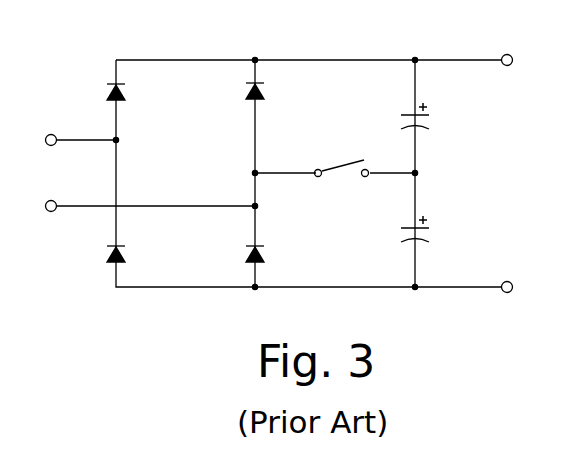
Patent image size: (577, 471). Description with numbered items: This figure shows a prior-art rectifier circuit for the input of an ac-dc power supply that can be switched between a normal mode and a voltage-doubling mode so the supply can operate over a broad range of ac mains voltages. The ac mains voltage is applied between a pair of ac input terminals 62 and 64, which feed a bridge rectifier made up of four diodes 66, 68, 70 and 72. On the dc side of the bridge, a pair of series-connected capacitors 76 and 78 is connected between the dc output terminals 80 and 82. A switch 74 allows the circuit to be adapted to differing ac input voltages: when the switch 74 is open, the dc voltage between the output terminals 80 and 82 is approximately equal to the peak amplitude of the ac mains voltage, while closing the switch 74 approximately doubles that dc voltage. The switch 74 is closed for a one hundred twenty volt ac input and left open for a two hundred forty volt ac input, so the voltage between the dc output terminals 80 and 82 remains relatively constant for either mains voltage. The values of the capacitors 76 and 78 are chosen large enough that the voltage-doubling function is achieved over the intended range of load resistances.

The ac input terminal 62 is at (78, 138).
The ac input terminal 64 is at (83, 208).
The diode 66 is at (118, 114).
The diode 68 is at (118, 235).
The diode 70 is at (257, 117).
The diode 72 is at (257, 231).
The switch 74 is at (311, 170).
The capacitor 76 is at (416, 100).
The capacitor 78 is at (416, 213).
The dc output terminal 80 is at (476, 58).
The dc output terminal 82 is at (476, 285).